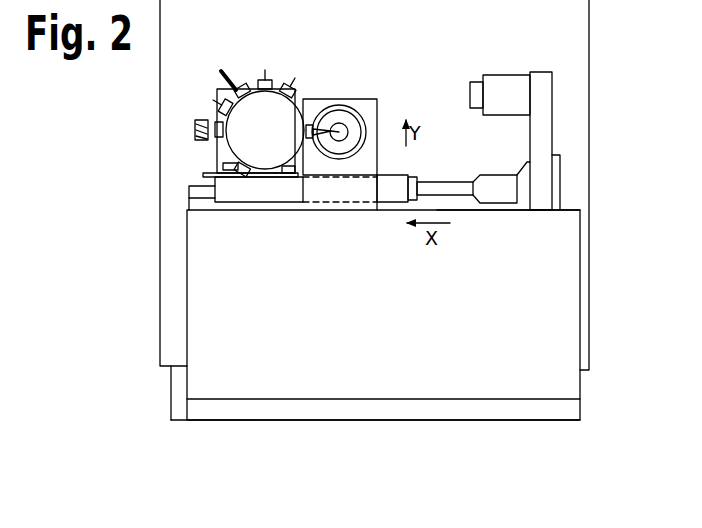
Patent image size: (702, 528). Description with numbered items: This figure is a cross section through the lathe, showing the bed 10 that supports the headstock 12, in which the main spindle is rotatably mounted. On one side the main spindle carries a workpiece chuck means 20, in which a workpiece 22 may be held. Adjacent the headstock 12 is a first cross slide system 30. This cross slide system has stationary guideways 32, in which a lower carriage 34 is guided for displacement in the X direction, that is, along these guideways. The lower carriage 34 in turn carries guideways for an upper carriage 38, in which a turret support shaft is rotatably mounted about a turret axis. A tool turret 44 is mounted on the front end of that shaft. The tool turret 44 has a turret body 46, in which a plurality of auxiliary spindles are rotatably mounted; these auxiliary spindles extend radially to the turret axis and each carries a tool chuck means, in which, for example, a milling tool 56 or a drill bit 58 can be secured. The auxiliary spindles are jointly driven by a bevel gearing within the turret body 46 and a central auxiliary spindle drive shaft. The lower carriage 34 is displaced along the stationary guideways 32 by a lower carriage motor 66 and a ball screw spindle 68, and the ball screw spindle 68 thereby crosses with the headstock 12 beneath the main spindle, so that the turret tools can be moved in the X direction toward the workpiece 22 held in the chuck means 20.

The bed 10 is at (558, 236).
The headstock 12 is at (364, 106).
The workpiece chuck means 20 is at (337, 110).
The workpiece 22 is at (348, 131).
The first cross slide system 30 is at (205, 176).
The stationary guideways 32 is at (197, 194).
The lower carriage 34 is at (272, 190).
The upper carriage 38 is at (222, 161).
The tool turret 44 is at (264, 74).
The turret body 46 is at (262, 152).
The milling tool 56 is at (195, 127).
The drill bit 58 is at (219, 72).
The lower carriage motor 66 is at (503, 84).
The ball screw spindle 68 is at (433, 177).